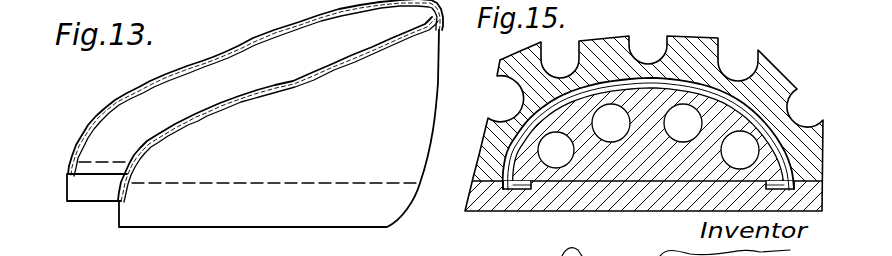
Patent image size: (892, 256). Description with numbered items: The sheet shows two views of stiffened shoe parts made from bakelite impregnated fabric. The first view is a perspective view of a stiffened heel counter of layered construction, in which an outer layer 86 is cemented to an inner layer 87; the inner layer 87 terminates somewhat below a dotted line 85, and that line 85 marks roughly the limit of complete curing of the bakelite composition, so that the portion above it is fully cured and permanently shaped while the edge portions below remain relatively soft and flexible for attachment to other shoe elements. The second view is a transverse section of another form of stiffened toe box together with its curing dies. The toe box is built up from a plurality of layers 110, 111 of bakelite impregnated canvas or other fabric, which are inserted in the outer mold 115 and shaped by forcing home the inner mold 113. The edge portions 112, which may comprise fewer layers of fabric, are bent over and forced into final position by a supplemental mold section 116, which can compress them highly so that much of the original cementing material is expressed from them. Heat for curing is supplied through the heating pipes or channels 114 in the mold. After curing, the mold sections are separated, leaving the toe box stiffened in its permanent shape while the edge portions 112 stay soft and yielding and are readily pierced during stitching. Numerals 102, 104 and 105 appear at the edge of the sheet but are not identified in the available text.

In FIG. 13, the dotted line 85 is at (280, 183).
In FIG. 13, the outer layer 86 is at (438, 79).
In FIG. 13, the inner layer 87 is at (97, 176).
In FIG. 15, the heel portion 102 is at (774, 11).
In FIG. 15, the heel portion 104 is at (622, 7).
In FIG. 15, the heel portion 105 is at (726, 6).
In FIG. 15, the layer 110 is at (731, 97).
In FIG. 15, the layer 111 is at (767, 125).
In FIG. 15, the edge portions 112 is at (487, 190).
In FIG. 15, the inner mold 113 is at (523, 155).
In FIG. 15, the heating pipes or channels 114 is at (743, 139).
In FIG. 15, the outer mold 115 is at (490, 128).
In FIG. 15, the supplemental mold section 116 is at (540, 207).